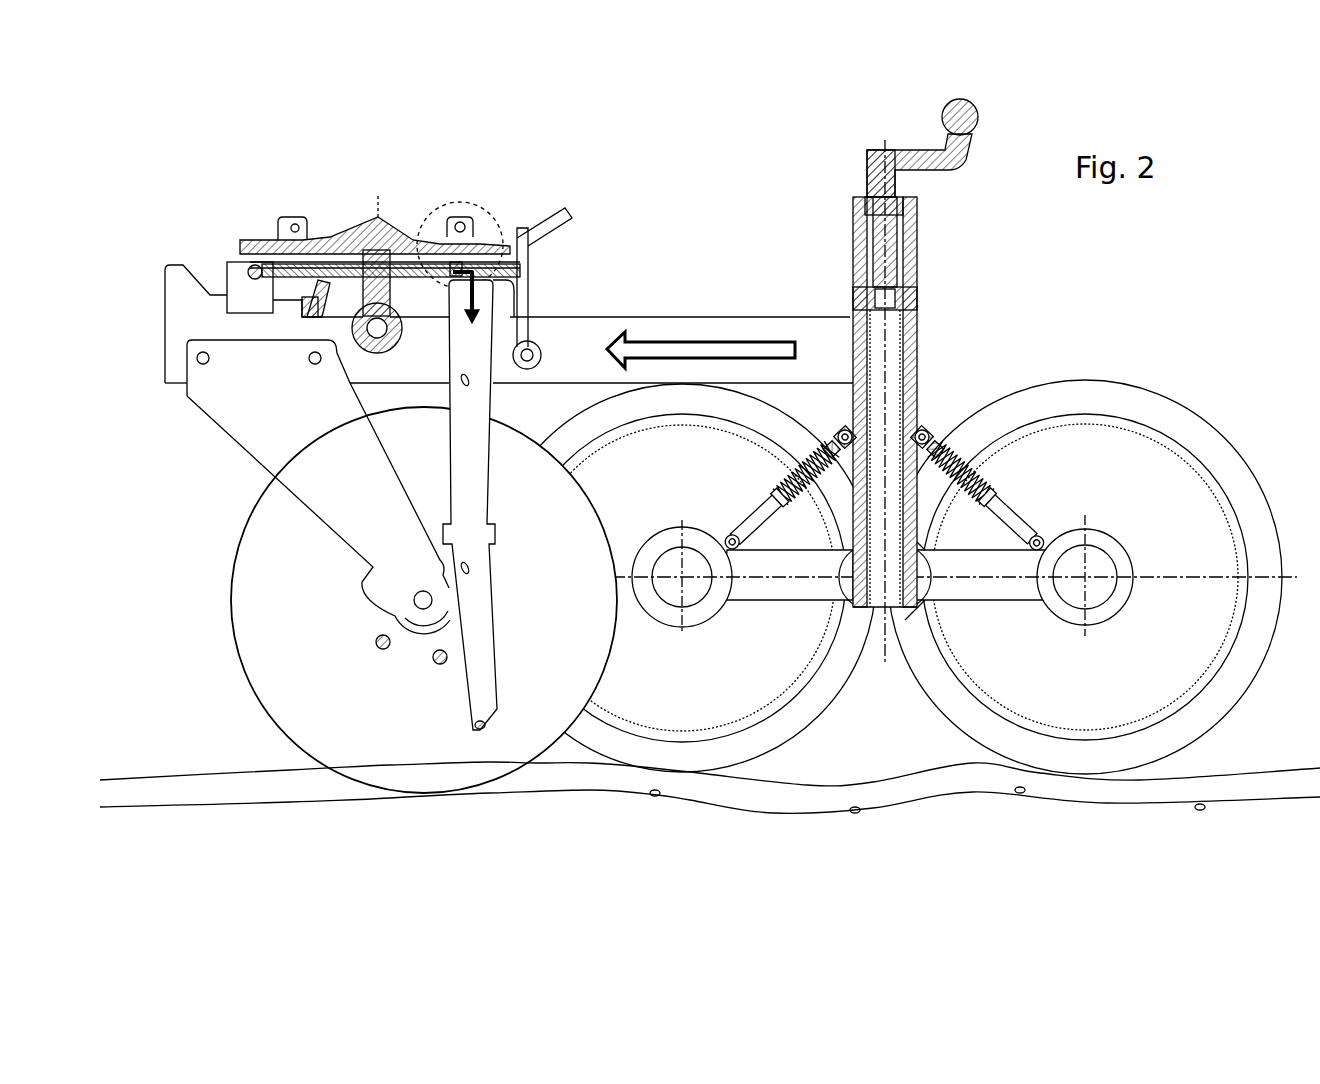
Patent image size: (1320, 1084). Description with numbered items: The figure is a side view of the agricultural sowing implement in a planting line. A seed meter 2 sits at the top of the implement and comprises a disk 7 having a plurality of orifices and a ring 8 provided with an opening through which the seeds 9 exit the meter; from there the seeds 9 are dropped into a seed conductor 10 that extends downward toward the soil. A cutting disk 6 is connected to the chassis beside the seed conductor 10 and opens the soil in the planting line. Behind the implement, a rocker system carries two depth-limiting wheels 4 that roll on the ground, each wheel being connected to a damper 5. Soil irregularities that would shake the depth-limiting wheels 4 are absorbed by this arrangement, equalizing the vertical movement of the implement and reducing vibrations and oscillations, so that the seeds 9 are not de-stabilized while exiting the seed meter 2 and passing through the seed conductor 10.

The seed meter 2 is at (352, 243).
The depth-limiting wheels 4 is at (1200, 430).
The damper 5 is at (996, 492).
The cutting disk 6 is at (252, 600).
The disk 7 is at (456, 262).
The ring 8 is at (448, 268).
The seeds 9 is at (470, 265).
The seed conductor 10 is at (494, 352).